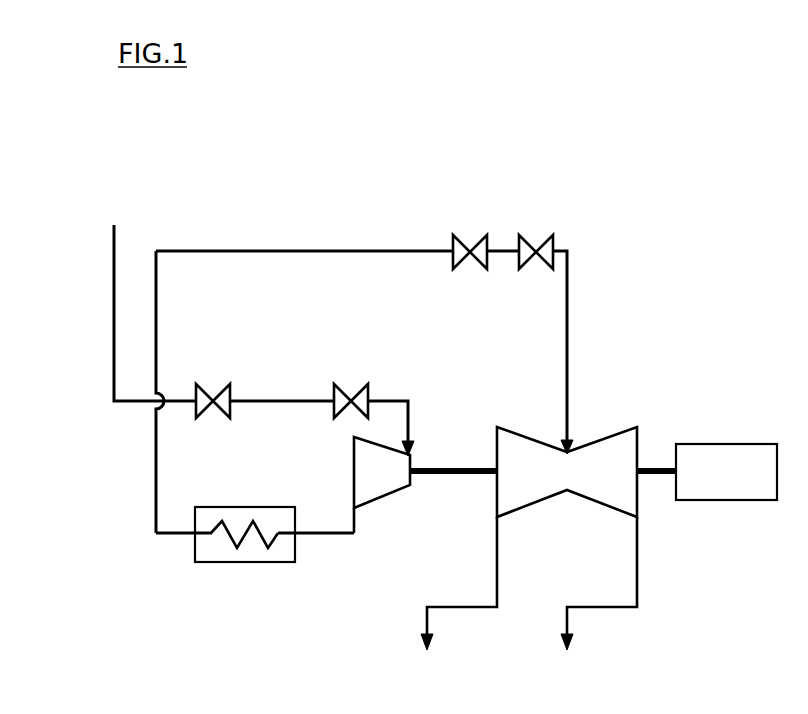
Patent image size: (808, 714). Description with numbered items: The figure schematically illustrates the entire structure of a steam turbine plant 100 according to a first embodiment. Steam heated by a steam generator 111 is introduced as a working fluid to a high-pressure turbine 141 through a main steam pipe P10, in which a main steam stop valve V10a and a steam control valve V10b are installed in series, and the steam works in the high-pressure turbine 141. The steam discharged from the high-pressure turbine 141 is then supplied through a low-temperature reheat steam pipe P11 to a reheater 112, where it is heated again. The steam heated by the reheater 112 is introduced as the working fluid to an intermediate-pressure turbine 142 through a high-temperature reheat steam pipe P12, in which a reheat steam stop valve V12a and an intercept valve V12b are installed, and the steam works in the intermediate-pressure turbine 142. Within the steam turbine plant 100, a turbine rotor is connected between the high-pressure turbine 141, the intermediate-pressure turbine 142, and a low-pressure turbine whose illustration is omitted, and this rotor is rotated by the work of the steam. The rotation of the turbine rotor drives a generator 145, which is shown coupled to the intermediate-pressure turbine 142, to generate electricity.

The steam turbine plant 100 is at (411, 140).
The steam generator 111 is at (147, 297).
The high-temperature reheat steam pipe P12 is at (353, 250).
The reheat steam stop valve V12a is at (484, 222).
The intercept valve V12b is at (541, 245).
The main steam stop valve V10a is at (215, 396).
The steam control valve V10b is at (355, 392).
The main steam pipe P10 is at (406, 400).
The high-pressure turbine 141 is at (389, 498).
The intermediate-pressure turbine 142 is at (530, 512).
The generator 145 is at (722, 501).
The reheater 112 is at (218, 563).
The low-temperature reheat steam pipe P11 is at (323, 536).